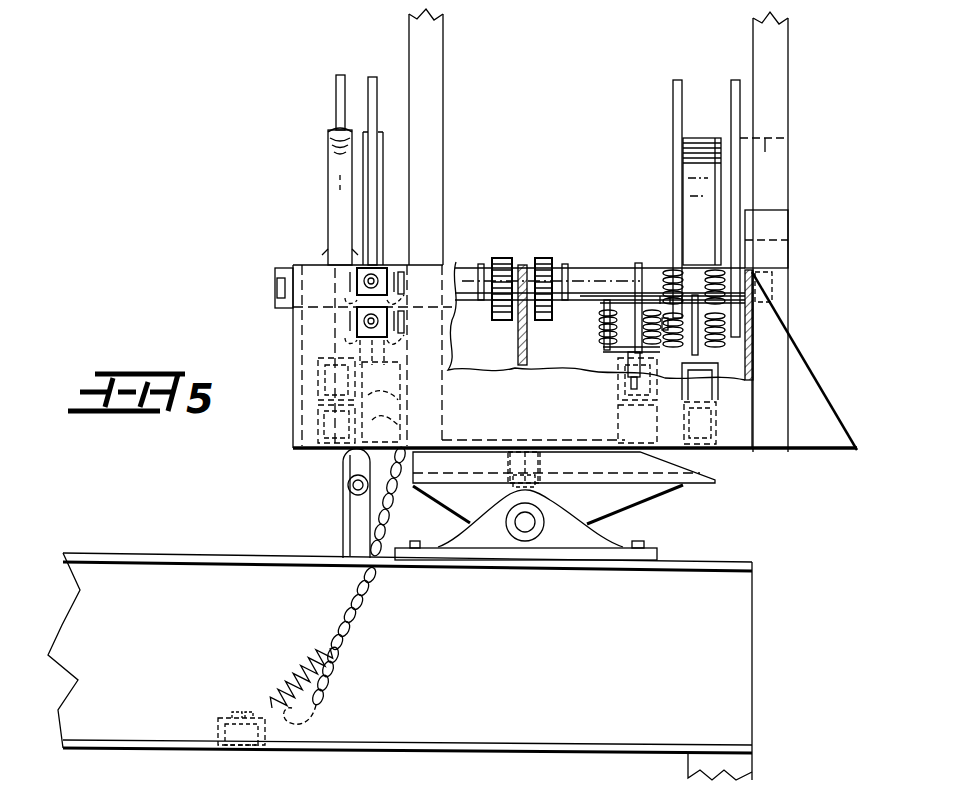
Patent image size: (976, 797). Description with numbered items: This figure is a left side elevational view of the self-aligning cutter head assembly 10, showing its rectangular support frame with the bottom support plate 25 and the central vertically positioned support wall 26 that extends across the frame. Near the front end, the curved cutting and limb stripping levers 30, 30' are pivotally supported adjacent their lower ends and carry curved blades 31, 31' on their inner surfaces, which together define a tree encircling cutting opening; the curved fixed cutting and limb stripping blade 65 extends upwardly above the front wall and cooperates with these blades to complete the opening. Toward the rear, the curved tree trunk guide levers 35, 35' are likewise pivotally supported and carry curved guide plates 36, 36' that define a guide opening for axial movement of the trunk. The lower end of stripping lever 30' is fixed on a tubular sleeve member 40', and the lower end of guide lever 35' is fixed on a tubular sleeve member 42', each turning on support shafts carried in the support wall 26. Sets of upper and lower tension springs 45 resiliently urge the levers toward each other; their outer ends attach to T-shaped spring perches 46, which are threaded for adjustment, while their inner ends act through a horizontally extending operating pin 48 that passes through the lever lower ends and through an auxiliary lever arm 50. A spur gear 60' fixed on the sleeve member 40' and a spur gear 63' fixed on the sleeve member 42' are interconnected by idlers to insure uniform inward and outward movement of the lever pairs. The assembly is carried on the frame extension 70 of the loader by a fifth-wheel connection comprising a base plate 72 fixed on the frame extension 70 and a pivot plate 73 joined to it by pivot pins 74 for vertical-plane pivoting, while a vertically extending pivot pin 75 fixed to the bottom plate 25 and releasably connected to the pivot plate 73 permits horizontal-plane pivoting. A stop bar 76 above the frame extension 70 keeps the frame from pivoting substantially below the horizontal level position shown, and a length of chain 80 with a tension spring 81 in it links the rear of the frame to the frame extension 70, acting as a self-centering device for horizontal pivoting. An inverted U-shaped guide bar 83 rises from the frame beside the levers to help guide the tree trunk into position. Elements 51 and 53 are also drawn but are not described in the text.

The self-aligning cutter head assembly 10 is at (243, 240).
The bottom support plate 25 is at (478, 440).
The central vertically positioned support wall 26 is at (520, 355).
The curved cutting and limb stripping lever 30 is at (725, 186).
The curved cutting and limb stripping lever 30' is at (673, 178).
The curved blade 31 is at (788, 131).
The curved blade 31' is at (675, 201).
The curved tree trunk guide lever 35 is at (317, 83).
The curved tree trunk guide lever 35' is at (367, 140).
The curved guide plate 36 is at (315, 195).
The curved guide plate 36' is at (394, 175).
The tubular sleeve member 40' is at (662, 256).
The tubular sleeve member 42' is at (600, 243).
The tension springs 45 is at (357, 285).
The T-shaped spring perches 46 is at (398, 288).
The operating pin 48 is at (612, 345).
The auxiliary lever arm 50 is at (639, 263).
The support 51 is at (380, 407).
The block 53 is at (322, 428).
The spur gear 60' is at (563, 267).
The spur gear 63' is at (491, 268).
The curved fixed cutting and limb stripping blade 65 is at (776, 256).
The frame extension 70 is at (612, 681).
The base plate 72 is at (585, 541).
The pivot plate 73 is at (650, 462).
The pivot pins 74 is at (526, 534).
The vertically extending pivot pin 75 is at (528, 440).
The stop bar 76 is at (352, 480).
The chain 80 is at (344, 642).
The tension spring 81 is at (280, 692).
The inverted U-shaped guide bar 83 is at (440, 30).